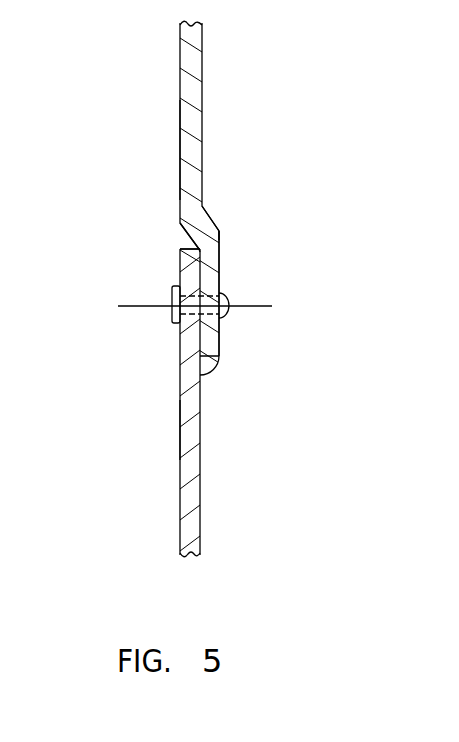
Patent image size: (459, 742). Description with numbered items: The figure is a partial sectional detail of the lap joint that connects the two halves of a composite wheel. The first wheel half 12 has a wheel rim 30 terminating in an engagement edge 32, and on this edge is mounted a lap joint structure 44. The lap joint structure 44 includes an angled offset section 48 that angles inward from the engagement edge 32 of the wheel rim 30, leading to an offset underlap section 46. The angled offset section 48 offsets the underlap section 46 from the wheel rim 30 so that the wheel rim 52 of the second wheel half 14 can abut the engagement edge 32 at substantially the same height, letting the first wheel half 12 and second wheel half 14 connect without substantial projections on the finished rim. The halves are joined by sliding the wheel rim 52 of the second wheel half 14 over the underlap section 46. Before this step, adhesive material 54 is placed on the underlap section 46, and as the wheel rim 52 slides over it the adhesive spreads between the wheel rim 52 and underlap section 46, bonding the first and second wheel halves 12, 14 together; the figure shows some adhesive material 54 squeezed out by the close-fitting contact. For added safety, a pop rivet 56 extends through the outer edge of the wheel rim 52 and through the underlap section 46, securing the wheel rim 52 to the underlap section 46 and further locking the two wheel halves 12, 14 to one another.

The first wheel half 12 is at (188, 100).
The second wheel half 14 is at (192, 497).
The wheel rim 30 is at (186, 150).
The engagement edge 32 is at (192, 214).
The lap joint structure 44 is at (214, 272).
The offset underlap section 46 is at (212, 335).
The angled offset section 48 is at (204, 238).
The wheel rim 52 is at (187, 433).
The adhesive material 54 is at (186, 244).
The pop rivet 56 is at (173, 308).